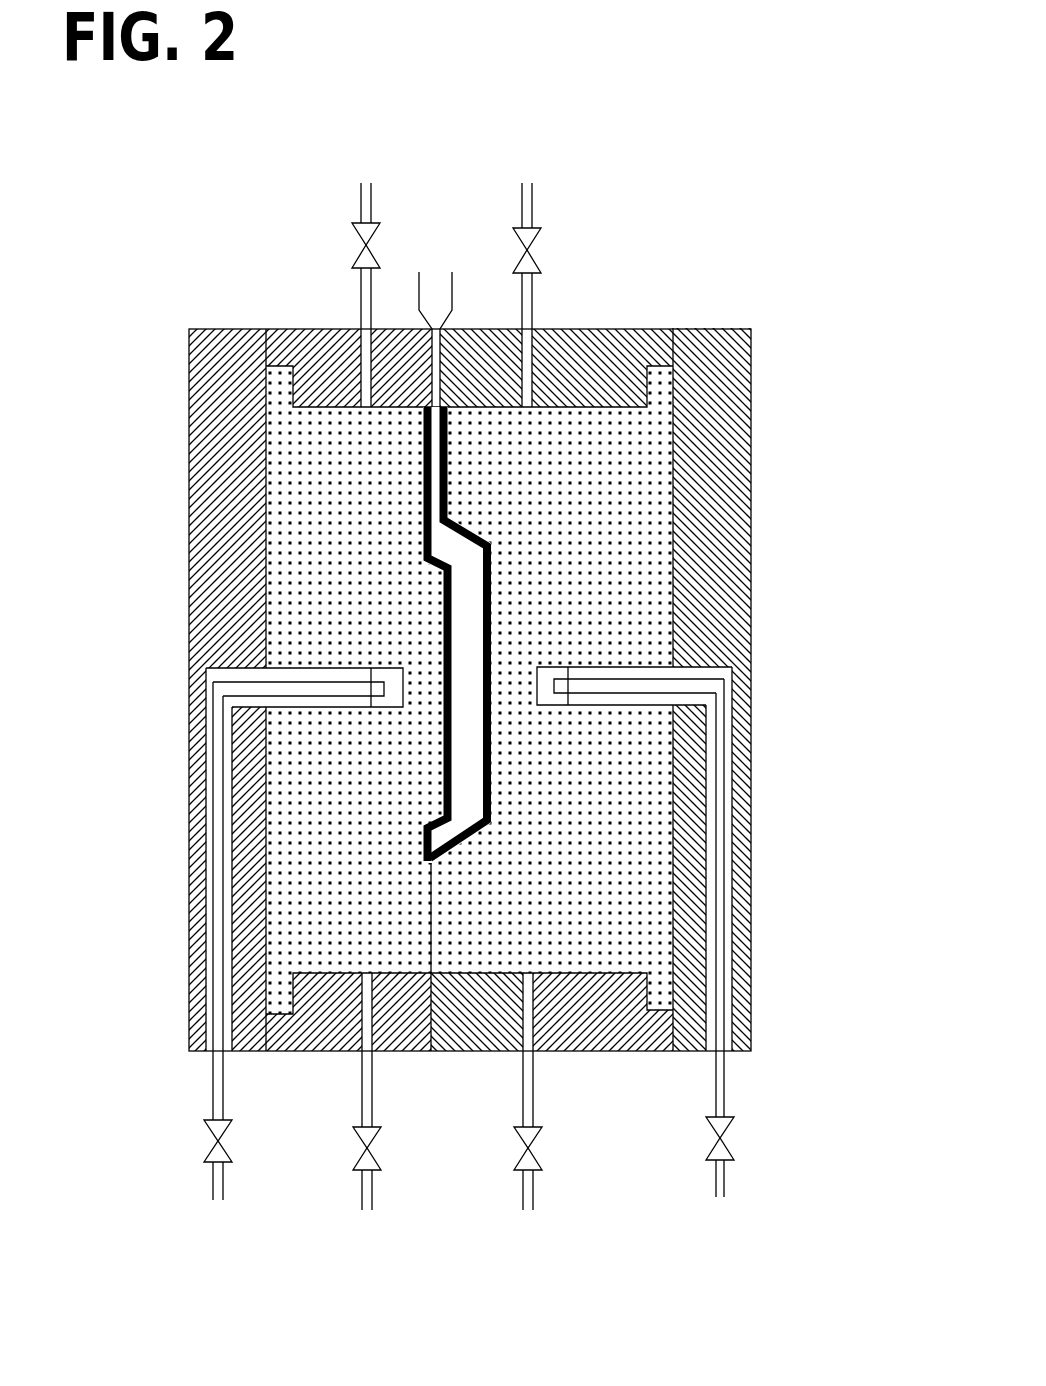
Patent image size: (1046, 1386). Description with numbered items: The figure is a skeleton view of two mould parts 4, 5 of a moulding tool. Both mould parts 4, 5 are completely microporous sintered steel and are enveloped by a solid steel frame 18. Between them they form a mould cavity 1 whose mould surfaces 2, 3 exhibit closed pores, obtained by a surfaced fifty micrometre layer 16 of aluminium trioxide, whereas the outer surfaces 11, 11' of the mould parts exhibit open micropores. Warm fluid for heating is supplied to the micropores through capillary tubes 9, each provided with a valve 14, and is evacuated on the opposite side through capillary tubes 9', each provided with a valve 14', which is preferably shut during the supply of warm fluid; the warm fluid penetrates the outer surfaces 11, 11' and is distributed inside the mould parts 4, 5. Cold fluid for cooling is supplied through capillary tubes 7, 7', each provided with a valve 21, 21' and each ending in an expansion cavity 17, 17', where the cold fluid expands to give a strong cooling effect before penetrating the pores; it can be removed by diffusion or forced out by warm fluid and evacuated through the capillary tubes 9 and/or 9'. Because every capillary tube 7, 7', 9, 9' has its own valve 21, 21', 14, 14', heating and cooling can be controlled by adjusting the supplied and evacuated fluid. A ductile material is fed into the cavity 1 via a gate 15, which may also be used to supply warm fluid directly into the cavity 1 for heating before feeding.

The mould cavity 1 is at (478, 635).
The mould surface 2 is at (483, 607).
The mould surface 3 is at (452, 635).
The mould part 4 is at (588, 427).
The mould part 5 is at (323, 793).
The capillary tube 7 is at (181, 941).
The capillary tube 7' is at (775, 938).
The capillary tube 9 is at (435, 273).
The capillary tube 9' is at (446, 1114).
The outer surface 11 is at (464, 686).
The outer surface 11' is at (782, 787).
The valve 14 is at (417, 208).
The valve 14' is at (417, 1197).
The gate 15 is at (442, 305).
The layer of aluminium trioxide 16 is at (452, 740).
The expansion cavity 17 is at (242, 665).
The expansion cavity 17' is at (711, 671).
The solid steel frame 18 is at (220, 385).
The valve 21 is at (180, 1174).
The valve 21' is at (764, 1171).